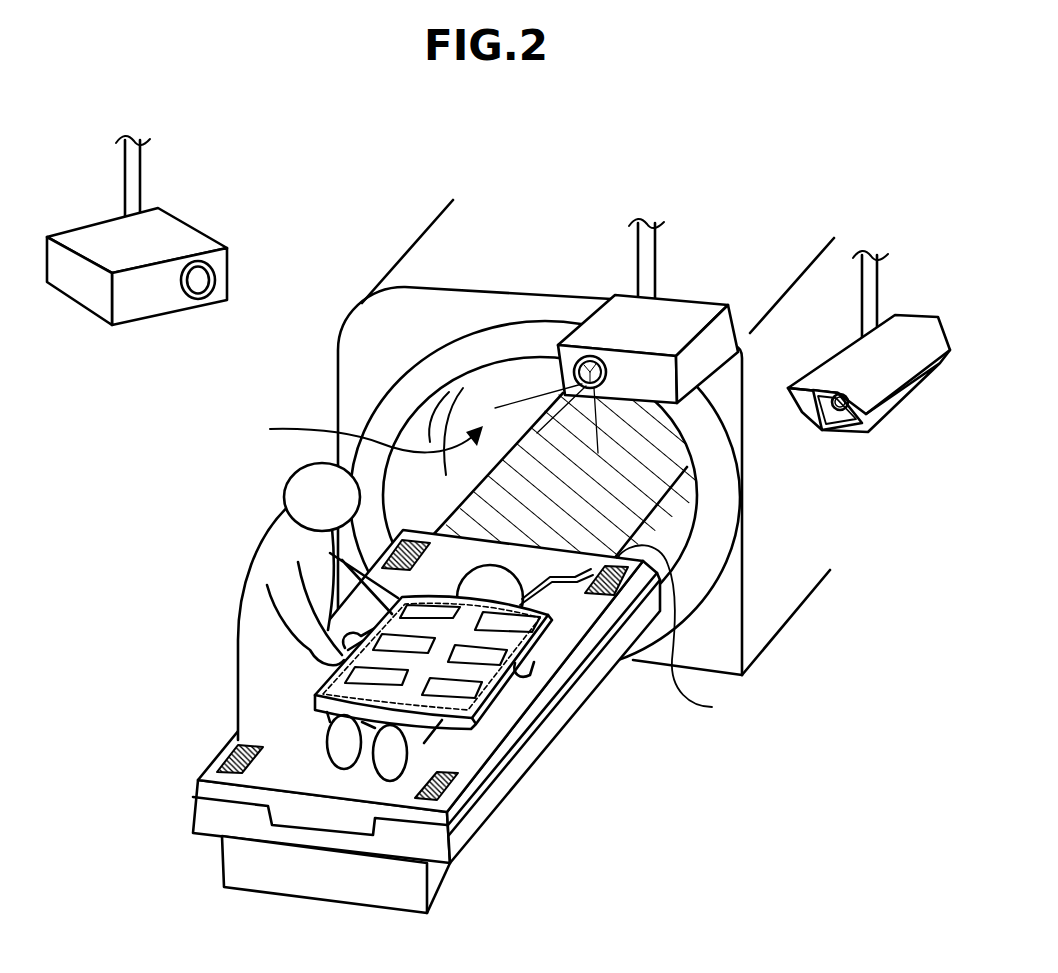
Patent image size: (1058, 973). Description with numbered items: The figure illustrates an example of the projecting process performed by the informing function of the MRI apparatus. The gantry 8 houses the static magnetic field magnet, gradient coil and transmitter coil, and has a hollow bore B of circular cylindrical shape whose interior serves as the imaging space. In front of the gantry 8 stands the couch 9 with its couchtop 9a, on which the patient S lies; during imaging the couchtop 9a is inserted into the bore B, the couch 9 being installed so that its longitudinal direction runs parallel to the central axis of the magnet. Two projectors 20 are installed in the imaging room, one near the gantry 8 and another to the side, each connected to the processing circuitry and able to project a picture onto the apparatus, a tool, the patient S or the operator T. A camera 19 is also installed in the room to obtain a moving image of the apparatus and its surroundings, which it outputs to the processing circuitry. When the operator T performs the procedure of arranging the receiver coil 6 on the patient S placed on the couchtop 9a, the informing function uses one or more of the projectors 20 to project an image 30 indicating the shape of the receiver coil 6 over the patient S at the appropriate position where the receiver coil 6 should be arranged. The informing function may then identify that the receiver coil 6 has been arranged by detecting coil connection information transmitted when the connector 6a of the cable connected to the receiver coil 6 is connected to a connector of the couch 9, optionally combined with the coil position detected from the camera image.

The gantry 8 is at (393, 268).
The projector 20 is at (77, 238).
The camera 19 is at (912, 397).
The couch 9 is at (490, 798).
The couchtop 9a is at (500, 753).
The image 30 is at (500, 677).
The receiver coil 6 is at (493, 640).
The connector 6a is at (631, 634).
The bore B is at (362, 435).
The operator T is at (242, 577).
The patient S is at (330, 753).